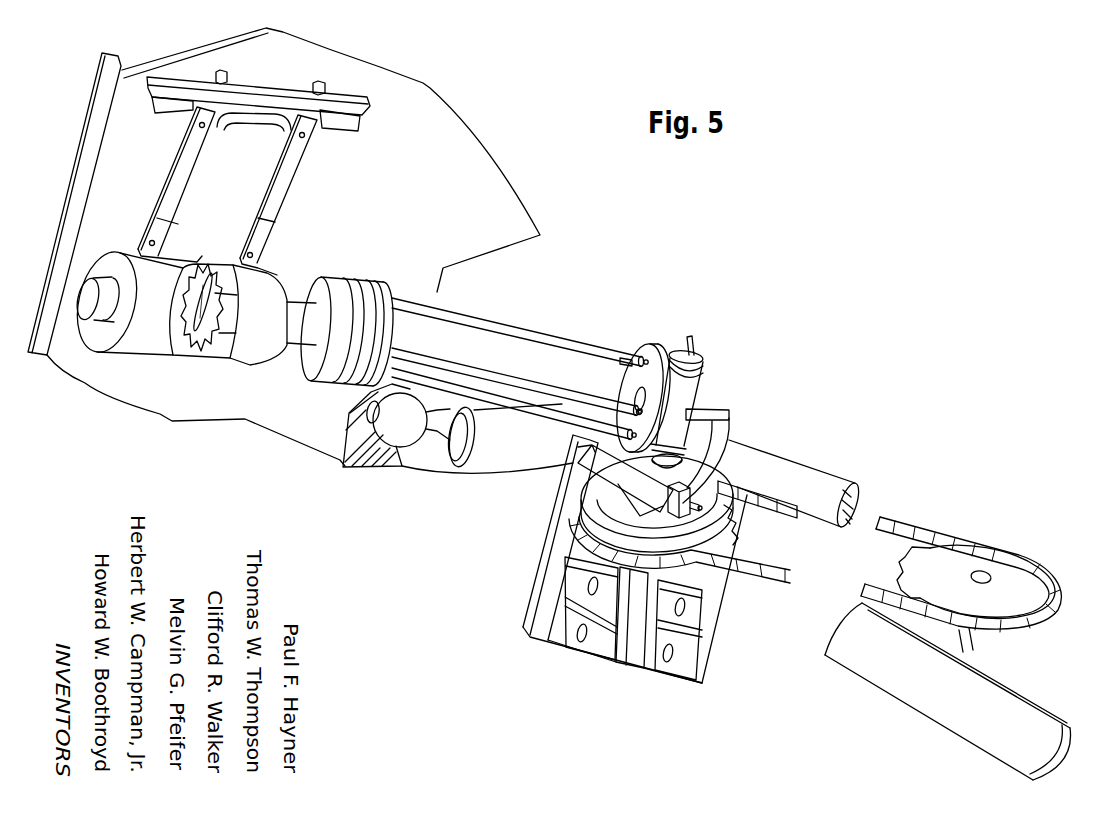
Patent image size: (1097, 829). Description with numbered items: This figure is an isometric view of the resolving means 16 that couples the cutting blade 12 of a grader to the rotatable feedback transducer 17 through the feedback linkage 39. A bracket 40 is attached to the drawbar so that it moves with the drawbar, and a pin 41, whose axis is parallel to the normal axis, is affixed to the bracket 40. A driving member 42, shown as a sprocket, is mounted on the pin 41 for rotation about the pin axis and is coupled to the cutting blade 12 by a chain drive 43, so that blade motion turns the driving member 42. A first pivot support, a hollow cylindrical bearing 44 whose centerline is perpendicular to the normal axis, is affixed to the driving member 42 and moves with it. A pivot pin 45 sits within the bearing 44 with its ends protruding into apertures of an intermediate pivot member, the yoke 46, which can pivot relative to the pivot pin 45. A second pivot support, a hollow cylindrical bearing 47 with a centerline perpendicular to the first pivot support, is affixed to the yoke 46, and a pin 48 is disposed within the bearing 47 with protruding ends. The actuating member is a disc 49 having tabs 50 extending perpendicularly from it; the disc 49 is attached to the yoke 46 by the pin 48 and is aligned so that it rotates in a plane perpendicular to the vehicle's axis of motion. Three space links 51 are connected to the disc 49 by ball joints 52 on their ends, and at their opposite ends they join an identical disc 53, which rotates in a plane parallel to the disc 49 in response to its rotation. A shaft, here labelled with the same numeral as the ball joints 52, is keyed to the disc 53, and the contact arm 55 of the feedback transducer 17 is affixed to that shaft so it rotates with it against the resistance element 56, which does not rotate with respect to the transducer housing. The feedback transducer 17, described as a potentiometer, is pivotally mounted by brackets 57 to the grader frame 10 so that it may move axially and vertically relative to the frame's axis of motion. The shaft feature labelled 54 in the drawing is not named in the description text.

The grader frame 10 is at (128, 380).
The cutting blade 12 is at (1032, 710).
The resolving means 16 is at (724, 367).
The feedback transducer 17 is at (280, 278).
The feedback linkage 39 is at (551, 333).
The bracket 40 is at (694, 607).
The pin 41 is at (676, 459).
The driving member 42 is at (590, 534).
The chain drive 43 is at (831, 475).
The hollow cylindrical bearing 44 is at (606, 461).
The pivot pin 45 is at (692, 501).
The yoke 46 is at (724, 430).
The hollow cylindrical bearing 47 is at (686, 390).
The pin 48 is at (690, 338).
The disc 49 is at (652, 350).
The tabs 50 is at (703, 354).
The space links 51 is at (498, 401).
The ball joints 52 is at (642, 362).
The disc 53 is at (386, 284).
The shaft 54 is at (303, 310).
The contact arm 55 is at (209, 277).
The resistance element 56 is at (200, 354).
The brackets 57 is at (295, 186).